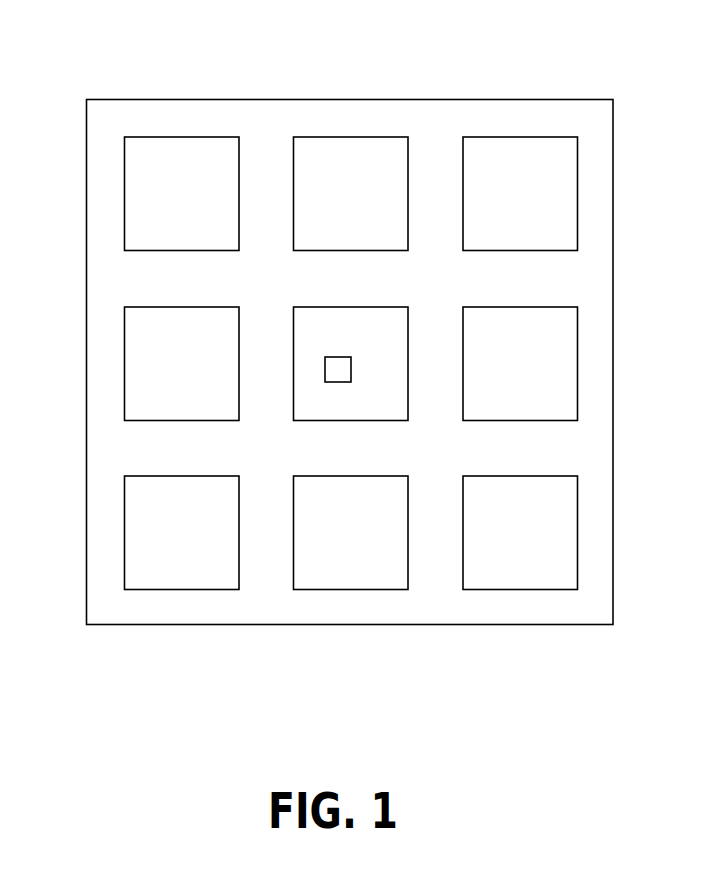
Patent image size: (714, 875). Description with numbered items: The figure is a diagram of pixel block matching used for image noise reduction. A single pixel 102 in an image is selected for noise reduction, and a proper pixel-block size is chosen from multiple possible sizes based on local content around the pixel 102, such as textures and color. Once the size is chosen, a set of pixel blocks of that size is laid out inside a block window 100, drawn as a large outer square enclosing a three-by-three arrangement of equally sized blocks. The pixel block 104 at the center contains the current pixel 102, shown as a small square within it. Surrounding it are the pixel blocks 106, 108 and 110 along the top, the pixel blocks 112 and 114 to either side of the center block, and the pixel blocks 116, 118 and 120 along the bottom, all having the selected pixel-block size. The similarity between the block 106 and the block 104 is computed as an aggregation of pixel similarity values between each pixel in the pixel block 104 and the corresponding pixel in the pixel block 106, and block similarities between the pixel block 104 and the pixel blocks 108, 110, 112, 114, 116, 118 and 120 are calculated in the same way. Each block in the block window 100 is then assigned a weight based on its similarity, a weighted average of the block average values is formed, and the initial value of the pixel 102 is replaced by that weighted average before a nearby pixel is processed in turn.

The block window 100 is at (350, 316).
The pixel 102 is at (355, 320).
The pixel block 104 is at (325, 340).
The pixel block 106 is at (139, 172).
The pixel block 108 is at (343, 147).
The pixel block 110 is at (512, 147).
The pixel block 112 is at (136, 340).
The pixel block 114 is at (494, 340).
The pixel block 116 is at (141, 508).
The pixel block 118 is at (325, 509).
The pixel block 120 is at (494, 509).